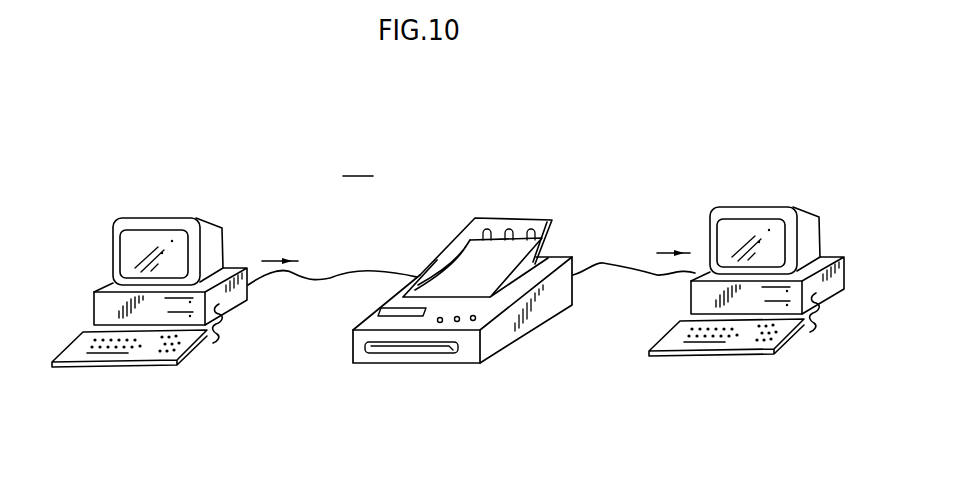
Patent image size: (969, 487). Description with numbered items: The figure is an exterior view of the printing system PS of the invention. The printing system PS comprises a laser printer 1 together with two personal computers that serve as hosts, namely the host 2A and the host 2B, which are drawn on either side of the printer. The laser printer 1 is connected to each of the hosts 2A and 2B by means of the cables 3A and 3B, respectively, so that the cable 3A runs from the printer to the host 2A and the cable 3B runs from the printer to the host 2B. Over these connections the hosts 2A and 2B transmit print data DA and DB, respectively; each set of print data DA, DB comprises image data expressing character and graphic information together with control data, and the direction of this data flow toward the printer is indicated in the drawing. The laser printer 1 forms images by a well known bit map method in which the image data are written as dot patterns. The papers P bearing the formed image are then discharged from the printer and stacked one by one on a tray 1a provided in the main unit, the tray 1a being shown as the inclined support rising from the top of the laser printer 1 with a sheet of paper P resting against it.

The laser printer 1 is at (491, 208).
The tray 1a is at (542, 217).
The personal computer (host) 2A is at (832, 218).
The personal computer (host) 2B is at (250, 238).
The cable 3A is at (603, 263).
The cable 3B is at (358, 273).
The paper P is at (462, 252).
The printing system PS is at (358, 162).
The print data DA is at (673, 243).
The print data DB is at (280, 249).